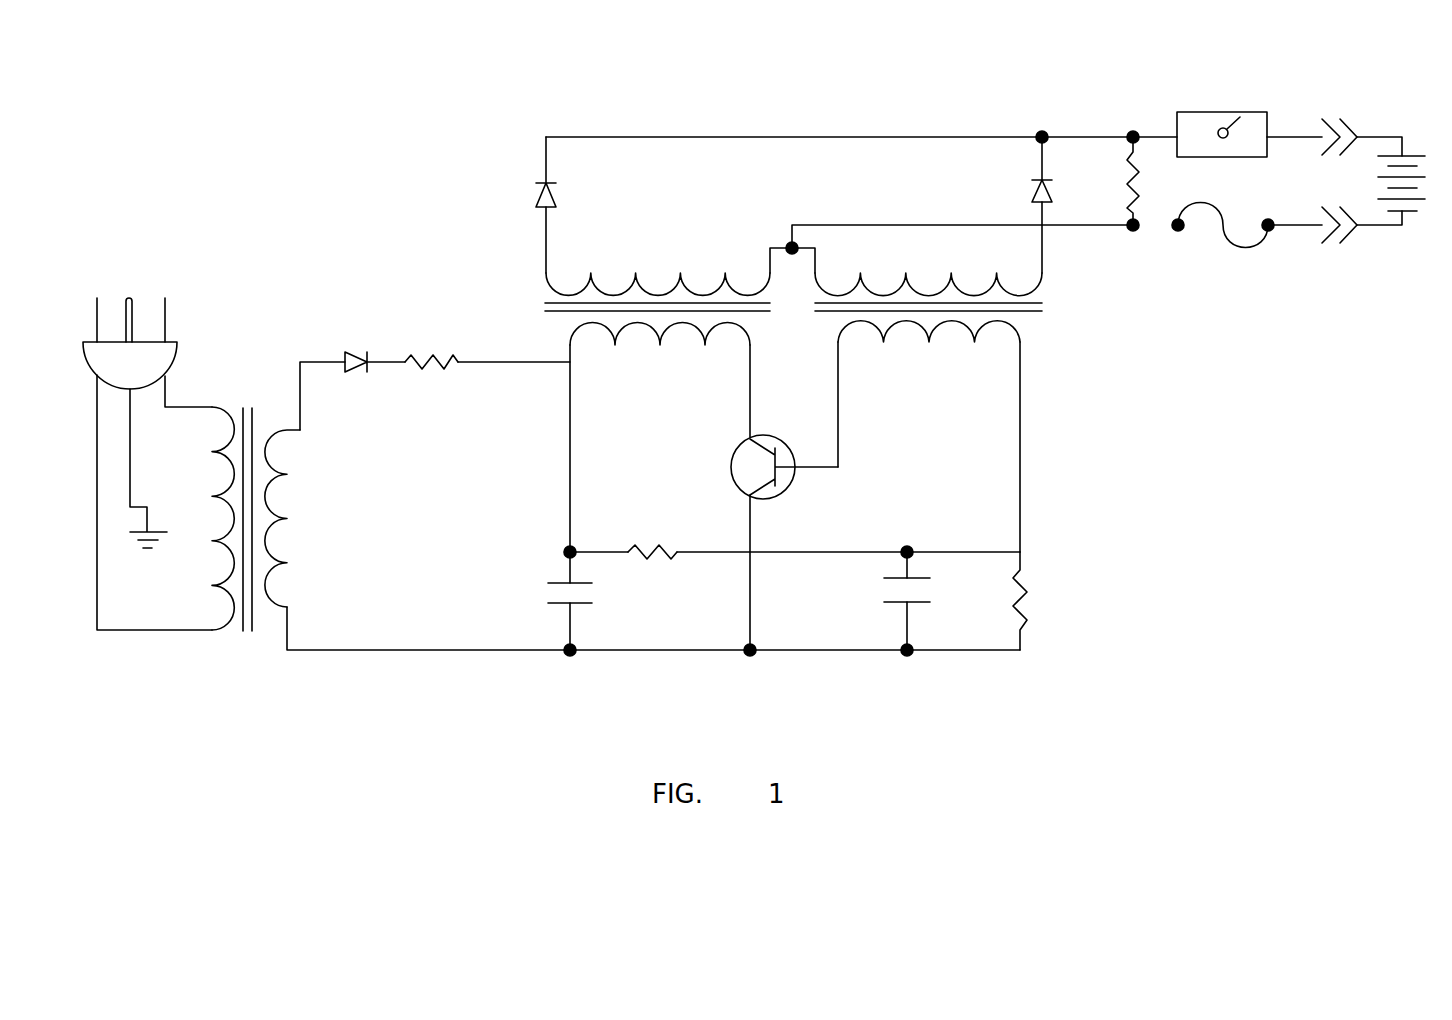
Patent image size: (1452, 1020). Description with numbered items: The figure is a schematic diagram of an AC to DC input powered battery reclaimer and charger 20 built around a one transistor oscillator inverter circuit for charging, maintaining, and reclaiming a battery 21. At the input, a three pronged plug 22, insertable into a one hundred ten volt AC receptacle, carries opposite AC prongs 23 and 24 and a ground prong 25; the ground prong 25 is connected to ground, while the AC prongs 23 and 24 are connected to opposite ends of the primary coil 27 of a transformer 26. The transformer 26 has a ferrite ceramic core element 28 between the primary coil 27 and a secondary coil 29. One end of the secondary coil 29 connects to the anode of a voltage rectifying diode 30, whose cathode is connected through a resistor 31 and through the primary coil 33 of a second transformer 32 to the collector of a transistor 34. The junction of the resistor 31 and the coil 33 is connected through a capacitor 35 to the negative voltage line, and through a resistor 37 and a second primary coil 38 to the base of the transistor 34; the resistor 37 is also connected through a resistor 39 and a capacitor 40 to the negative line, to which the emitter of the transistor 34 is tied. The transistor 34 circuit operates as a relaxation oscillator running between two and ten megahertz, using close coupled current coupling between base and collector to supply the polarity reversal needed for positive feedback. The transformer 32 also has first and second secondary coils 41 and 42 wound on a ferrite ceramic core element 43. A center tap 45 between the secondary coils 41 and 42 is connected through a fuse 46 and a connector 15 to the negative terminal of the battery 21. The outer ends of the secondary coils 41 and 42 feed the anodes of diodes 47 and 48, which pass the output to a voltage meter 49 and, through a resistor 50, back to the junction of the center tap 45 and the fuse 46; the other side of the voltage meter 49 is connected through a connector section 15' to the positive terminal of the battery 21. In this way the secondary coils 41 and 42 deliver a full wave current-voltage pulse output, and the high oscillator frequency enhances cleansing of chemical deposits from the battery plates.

The connector 15 is at (1335, 248).
The connector section 15' is at (1348, 106).
The battery reclaimer and charger 20 is at (856, 397).
The battery 21 is at (1378, 176).
The three pronged plug 22 is at (163, 361).
The AC prong 23 is at (97, 298).
The AC prong 24 is at (165, 306).
The ground prong 25 is at (131, 296).
The transformer 26 is at (253, 538).
The primary coil 27 is at (213, 540).
The ferrite ceramic core element 28 is at (252, 407).
The secondary coil 29 is at (280, 517).
The voltage rectifying diode 30 is at (348, 352).
The resistor 31 is at (440, 367).
The transformer 32 is at (777, 377).
The primary coil 33 is at (662, 346).
The transistor 34 is at (732, 466).
The capacitor 35 is at (547, 595).
The resistor 37 is at (649, 558).
The primary coil 38 is at (929, 344).
The resistor 39 is at (1025, 607).
The capacitor 40 is at (890, 590).
The first secondary coil 41 is at (680, 275).
The second secondary coil 42 is at (1044, 265).
The first ferrite ceramic core element 43 is at (547, 313).
The center tap 45 is at (790, 244).
The fuse 46 is at (1236, 244).
The diode 47 is at (537, 198).
The diode 48 is at (1032, 192).
The voltage meter 49 is at (1182, 112).
The resistor 50 is at (1130, 177).